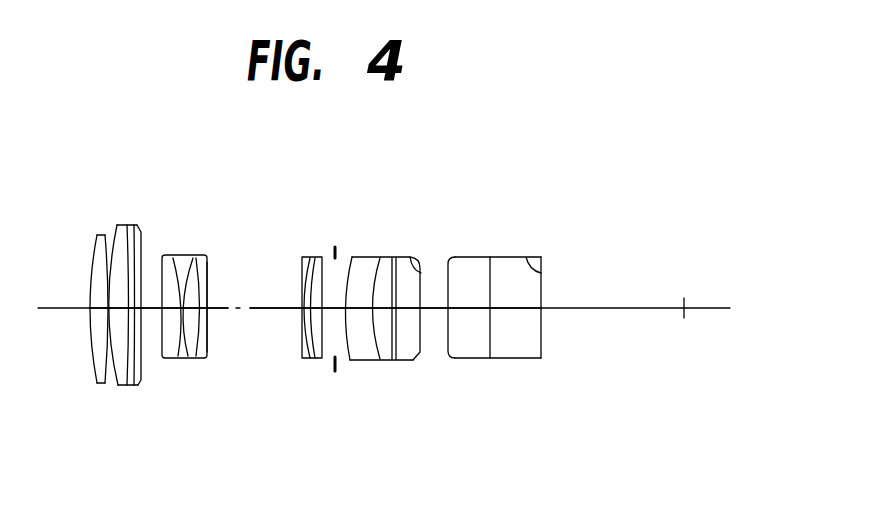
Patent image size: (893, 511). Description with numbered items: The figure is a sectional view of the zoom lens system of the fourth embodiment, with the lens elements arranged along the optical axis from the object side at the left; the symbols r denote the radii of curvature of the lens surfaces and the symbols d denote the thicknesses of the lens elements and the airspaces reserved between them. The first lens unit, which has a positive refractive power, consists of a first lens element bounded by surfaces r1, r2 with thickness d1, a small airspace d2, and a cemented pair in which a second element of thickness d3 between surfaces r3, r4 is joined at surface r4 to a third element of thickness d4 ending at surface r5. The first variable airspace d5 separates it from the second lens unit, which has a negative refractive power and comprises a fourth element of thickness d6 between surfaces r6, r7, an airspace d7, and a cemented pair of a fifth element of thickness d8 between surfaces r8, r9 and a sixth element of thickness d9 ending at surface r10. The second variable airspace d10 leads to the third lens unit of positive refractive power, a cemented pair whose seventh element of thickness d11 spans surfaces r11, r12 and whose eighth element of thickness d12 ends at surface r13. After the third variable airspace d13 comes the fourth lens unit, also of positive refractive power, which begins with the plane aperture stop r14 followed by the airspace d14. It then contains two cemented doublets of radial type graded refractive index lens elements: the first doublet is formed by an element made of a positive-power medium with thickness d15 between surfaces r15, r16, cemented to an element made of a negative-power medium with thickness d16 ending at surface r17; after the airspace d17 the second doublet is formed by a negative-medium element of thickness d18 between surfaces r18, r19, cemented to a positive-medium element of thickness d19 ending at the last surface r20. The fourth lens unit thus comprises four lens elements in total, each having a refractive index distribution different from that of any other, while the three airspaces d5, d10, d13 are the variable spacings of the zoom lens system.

The radius of curvature of first lens surface r1 is at (95, 244).
The radius of curvature of second lens surface r2 is at (104, 236).
The radius of curvature of third lens surface r3 is at (114, 242).
The radius of curvature of fourth lens surface r4 is at (121, 228).
The radius of curvature of fifth lens surface r5 is at (125, 232).
The radius of curvature of sixth lens surface r6 is at (143, 268).
The radius of curvature of seventh lens surface r7 is at (167, 257).
The radius of curvature of eighth lens surface r8 is at (188, 257).
The radius of curvature of ninth lens surface r9 is at (197, 257).
The radius of curvature of tenth lens surface r10 is at (208, 268).
The radius of curvature of eleventh lens surface r11 is at (296, 264).
The radius of curvature of twelfth lens surface r12 is at (307, 257).
The radius of curvature of thirteenth lens surface r13 is at (322, 262).
The aperture stop r14 is at (342, 262).
The radius of curvature of fifteenth lens surface r15 is at (360, 260).
The radius of curvature of sixteenth lens surface r16 is at (387, 262).
The radius of curvature of seventeenth lens surface r17 is at (407, 262).
The radius of curvature of eighteenth lens surface r18 is at (442, 263).
The radius of curvature of nineteenth lens surface r19 is at (482, 264).
The radius of curvature of twentieth lens surface r20 is at (531, 263).
The thickness of first lens element d1 is at (93, 312).
The airspace between first and second lens elements d2 is at (110, 312).
The thickness of second lens element d3 is at (128, 312).
The thickness of third lens element d4 is at (136, 312).
The first variable airspace d5 is at (140, 312).
The thickness of fourth lens element d6 is at (150, 312).
The airspace between fourth and fifth lens elements d7 is at (180, 312).
The thickness of fifth lens element d8 is at (190, 312).
The thickness of sixth lens element d9 is at (203, 313).
The second variable airspace d10 is at (253, 312).
The thickness of seventh lens element d11 is at (300, 312).
The thickness of eighth lens element d12 is at (312, 312).
The third variable airspace d13 is at (330, 312).
The airspace behind aperture stop d14 is at (335, 312).
The thickness of first graded refractive index lens element d15 is at (365, 312).
The thickness of second graded refractive index lens element d16 is at (392, 312).
The airspace between the two cemented doublets d17 is at (437, 312).
The thickness of third graded refractive index lens element d18 is at (470, 312).
The thickness of fourth graded refractive index lens element d19 is at (518, 312).